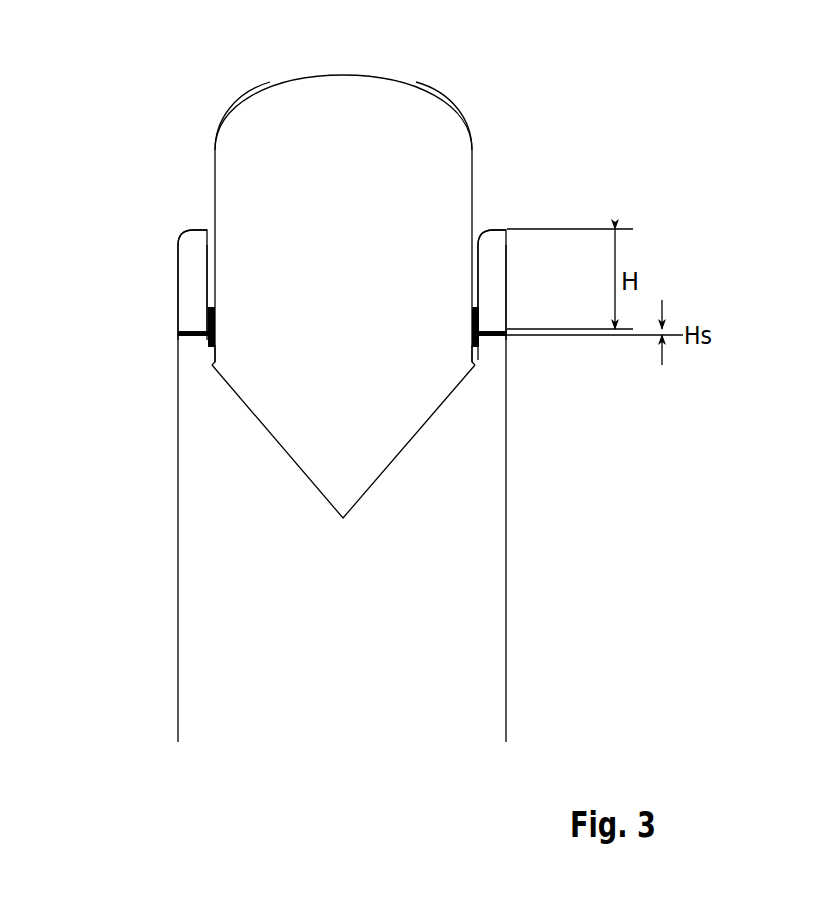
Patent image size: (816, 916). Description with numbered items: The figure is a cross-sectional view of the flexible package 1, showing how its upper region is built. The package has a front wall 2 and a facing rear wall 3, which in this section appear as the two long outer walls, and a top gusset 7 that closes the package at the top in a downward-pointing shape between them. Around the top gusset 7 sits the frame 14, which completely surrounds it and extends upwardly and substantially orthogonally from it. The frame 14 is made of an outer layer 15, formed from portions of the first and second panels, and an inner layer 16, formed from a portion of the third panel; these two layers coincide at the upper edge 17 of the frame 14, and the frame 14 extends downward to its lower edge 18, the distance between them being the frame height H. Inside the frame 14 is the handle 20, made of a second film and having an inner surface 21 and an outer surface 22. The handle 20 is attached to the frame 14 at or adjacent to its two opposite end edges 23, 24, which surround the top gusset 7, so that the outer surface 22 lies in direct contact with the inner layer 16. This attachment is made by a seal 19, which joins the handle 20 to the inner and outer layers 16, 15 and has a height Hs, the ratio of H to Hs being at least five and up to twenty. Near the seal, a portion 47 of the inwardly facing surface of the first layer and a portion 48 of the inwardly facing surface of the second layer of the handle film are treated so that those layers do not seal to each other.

The flexible package 1 is at (137, 478).
The front wall 2 is at (178, 606).
The rear wall 3 is at (506, 576).
The top gusset 7 is at (288, 453).
The frame 14 is at (178, 282).
The outer layer 15 is at (178, 233).
The inner layer 16 is at (208, 290).
The upper edge 17 is at (493, 228).
The lower edge 18 is at (507, 332).
The seal 19 is at (488, 335).
The handle 20 is at (422, 90).
The inner surface 21 is at (218, 196).
The outer surface 22 is at (213, 150).
The end edge 23 is at (222, 357).
The end edge 24 is at (466, 359).
The portion of the inwardly facing surface of the first layer 47 is at (217, 320).
The portion of the inwardly facing surface of the second layer 48 is at (470, 320).